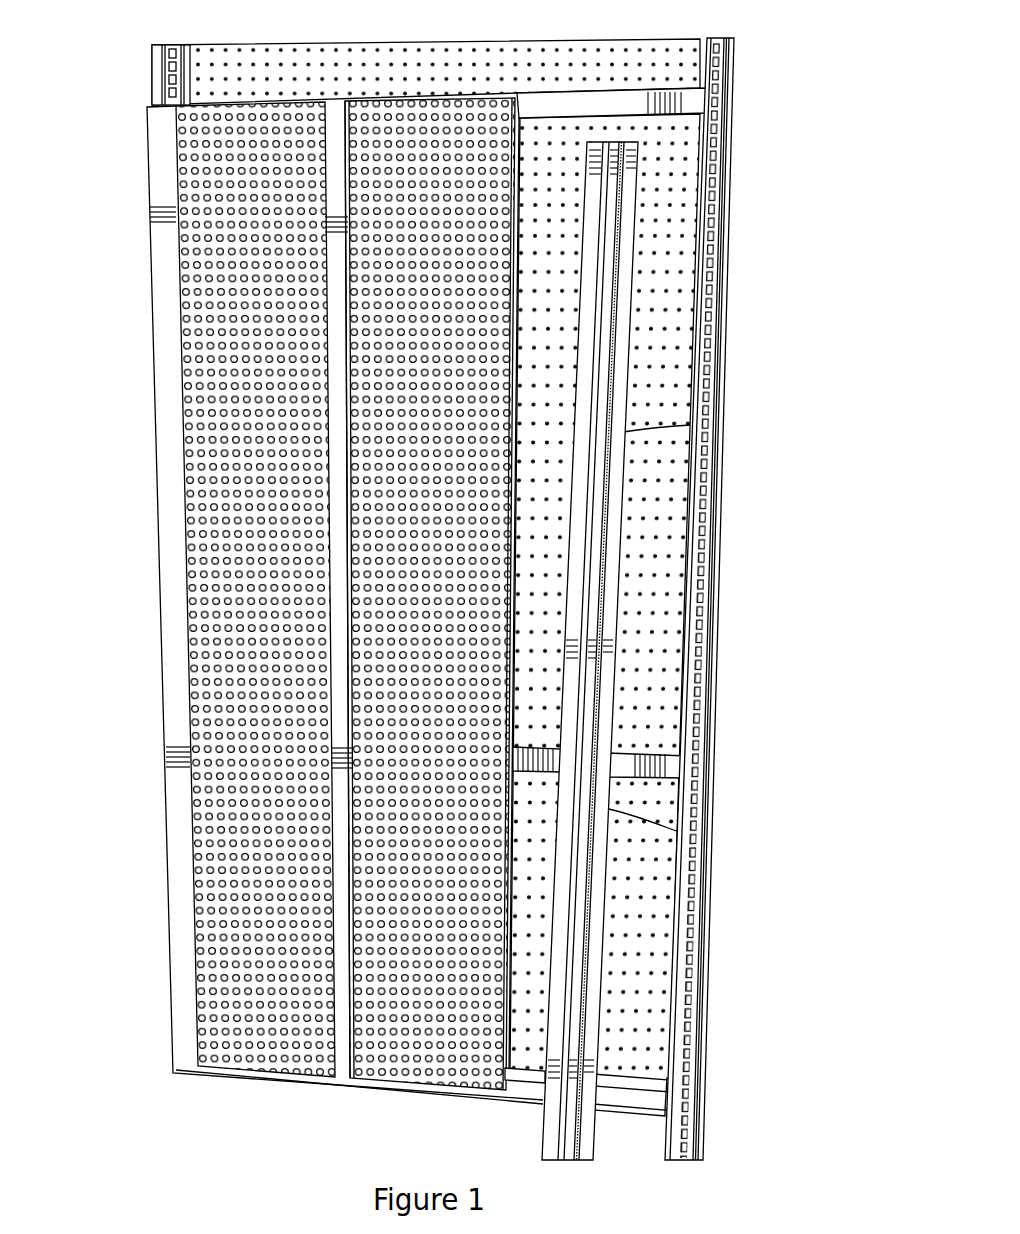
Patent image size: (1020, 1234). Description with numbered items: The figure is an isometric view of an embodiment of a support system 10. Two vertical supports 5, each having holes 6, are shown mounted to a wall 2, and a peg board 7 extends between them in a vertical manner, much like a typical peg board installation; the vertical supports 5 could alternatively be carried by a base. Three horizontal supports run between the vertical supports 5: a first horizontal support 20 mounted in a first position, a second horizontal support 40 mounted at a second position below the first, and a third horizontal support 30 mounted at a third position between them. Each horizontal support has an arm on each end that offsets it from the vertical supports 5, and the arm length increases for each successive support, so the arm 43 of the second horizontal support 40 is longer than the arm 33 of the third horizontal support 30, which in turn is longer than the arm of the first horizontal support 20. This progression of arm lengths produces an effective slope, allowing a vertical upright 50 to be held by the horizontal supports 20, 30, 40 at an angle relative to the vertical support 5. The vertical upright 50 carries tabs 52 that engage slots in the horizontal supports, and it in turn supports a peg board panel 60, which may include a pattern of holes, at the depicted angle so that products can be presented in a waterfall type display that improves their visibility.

The support system 10 is at (135, 605).
The first horizontal support 20 is at (604, 92).
The peg board 7 is at (672, 188).
The wall 2 is at (769, 599).
The vertical support 5 is at (727, 240).
The holes 6 is at (715, 360).
The peg board panel 60 is at (523, 163).
The vertical upright 50 is at (690, 425).
The tab 52 is at (697, 838).
The third horizontal support 30 is at (632, 742).
The arm 33 is at (700, 722).
The second horizontal support 40 is at (660, 1110).
The arm 43 is at (667, 1080).